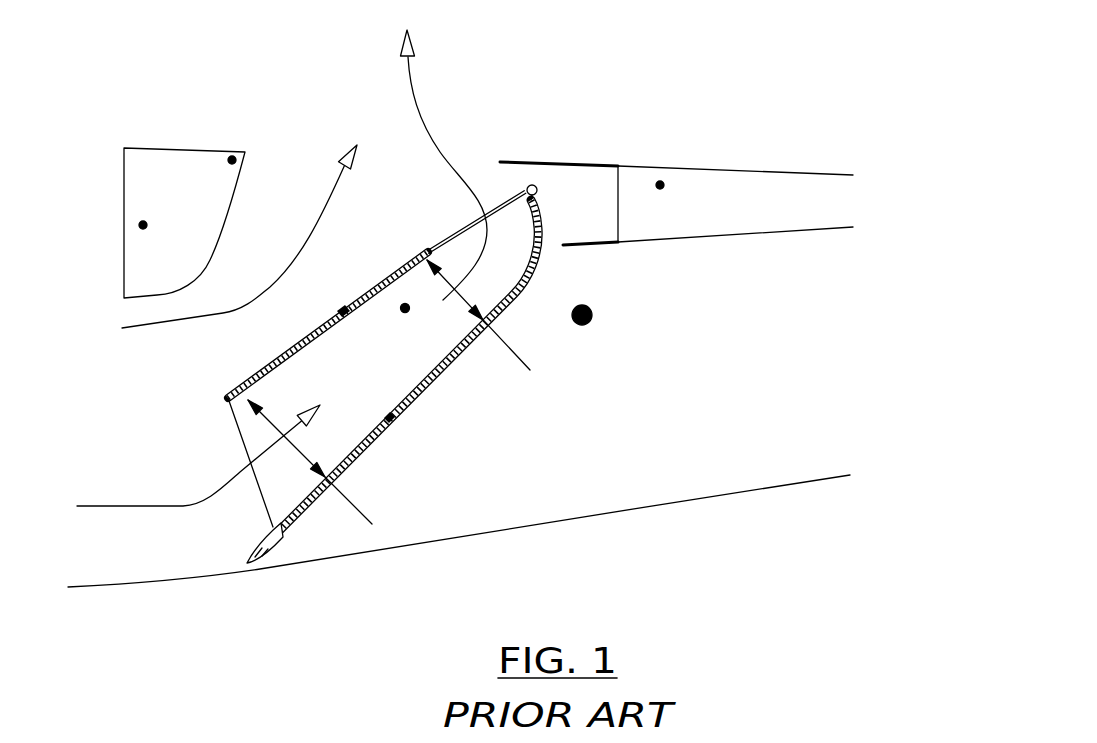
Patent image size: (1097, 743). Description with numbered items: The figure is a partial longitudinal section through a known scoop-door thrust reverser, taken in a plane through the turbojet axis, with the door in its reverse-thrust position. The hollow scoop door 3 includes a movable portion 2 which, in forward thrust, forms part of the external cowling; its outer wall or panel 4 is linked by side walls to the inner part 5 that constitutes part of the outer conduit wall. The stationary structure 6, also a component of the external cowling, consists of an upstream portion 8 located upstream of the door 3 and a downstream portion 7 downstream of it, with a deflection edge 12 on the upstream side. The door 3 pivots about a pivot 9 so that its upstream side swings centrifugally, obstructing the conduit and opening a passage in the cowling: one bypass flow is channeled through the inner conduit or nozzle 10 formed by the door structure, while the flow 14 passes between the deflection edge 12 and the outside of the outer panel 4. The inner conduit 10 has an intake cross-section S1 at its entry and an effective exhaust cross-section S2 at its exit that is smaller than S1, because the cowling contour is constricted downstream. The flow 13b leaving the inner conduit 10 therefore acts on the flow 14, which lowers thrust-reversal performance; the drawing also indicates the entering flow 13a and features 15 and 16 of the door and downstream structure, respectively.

The movable portion 2 is at (387, 320).
The door 3 is at (405, 305).
The outer panel 4 is at (340, 314).
The inner part 5 is at (389, 428).
The stationary structure 6 is at (121, 103).
The downstream portion 7 is at (660, 181).
The upstream portion 8 is at (143, 225).
The pivot 9 is at (583, 306).
The inner conduit 10 is at (310, 437).
The deflection edge 12 is at (232, 160).
The lower flow 13a is at (198, 478).
The flow leaving the inner conduit 13b is at (444, 165).
The bypass flow 14 is at (238, 255).
The slat leading edge 15 is at (487, 185).
The plate leading edge 16 is at (561, 142).
The intake cross-section S1 is at (322, 462).
The exhaust cross-section S2 is at (486, 315).